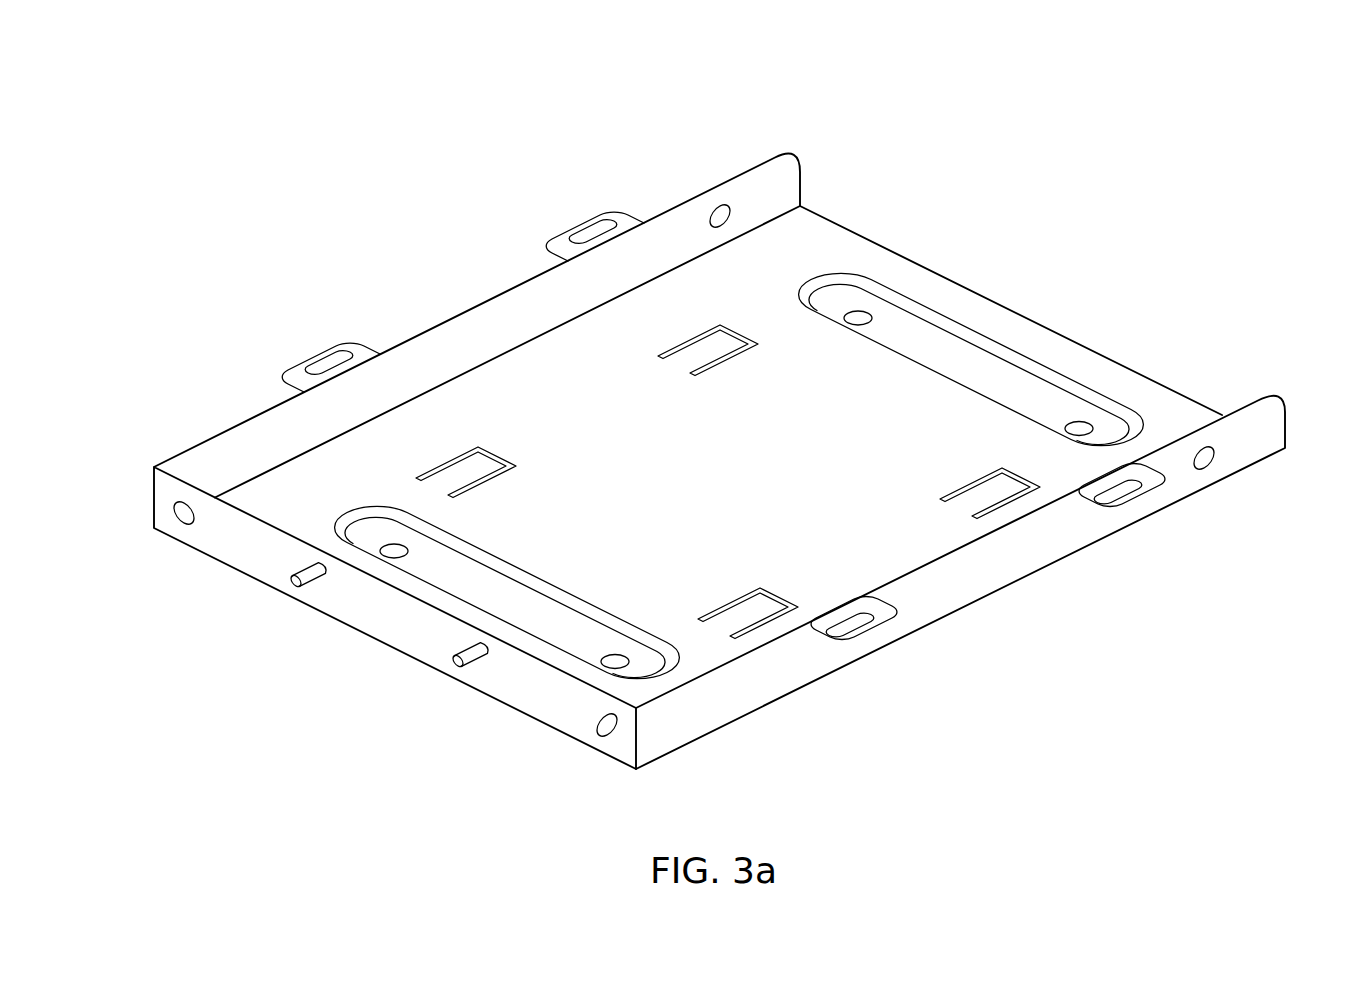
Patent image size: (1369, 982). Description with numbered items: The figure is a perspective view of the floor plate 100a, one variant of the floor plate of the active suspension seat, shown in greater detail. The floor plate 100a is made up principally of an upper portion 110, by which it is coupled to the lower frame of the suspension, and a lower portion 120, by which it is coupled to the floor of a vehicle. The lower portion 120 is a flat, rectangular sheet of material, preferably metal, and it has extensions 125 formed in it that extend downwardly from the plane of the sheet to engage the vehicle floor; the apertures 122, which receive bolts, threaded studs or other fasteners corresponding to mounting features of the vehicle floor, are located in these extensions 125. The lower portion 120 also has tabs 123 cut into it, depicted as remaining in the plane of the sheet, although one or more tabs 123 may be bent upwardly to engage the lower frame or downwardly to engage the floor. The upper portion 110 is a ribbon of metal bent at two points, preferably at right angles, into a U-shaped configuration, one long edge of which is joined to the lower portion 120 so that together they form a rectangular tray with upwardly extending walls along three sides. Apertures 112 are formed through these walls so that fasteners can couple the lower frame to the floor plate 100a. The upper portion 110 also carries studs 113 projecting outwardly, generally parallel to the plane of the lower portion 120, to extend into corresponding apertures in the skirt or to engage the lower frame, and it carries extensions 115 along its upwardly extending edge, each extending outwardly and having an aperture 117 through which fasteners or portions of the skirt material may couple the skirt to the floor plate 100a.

The floor plate 100a is at (183, 114).
The upper portion 110 is at (499, 348).
The apertures 112 is at (178, 510).
The studs 113 is at (470, 652).
The extensions 115 is at (592, 212).
The aperture 117 is at (598, 222).
The lower portion 120 is at (822, 442).
The apertures 122 is at (398, 550).
The tabs 123 is at (720, 345).
The extensions 125 is at (457, 578).